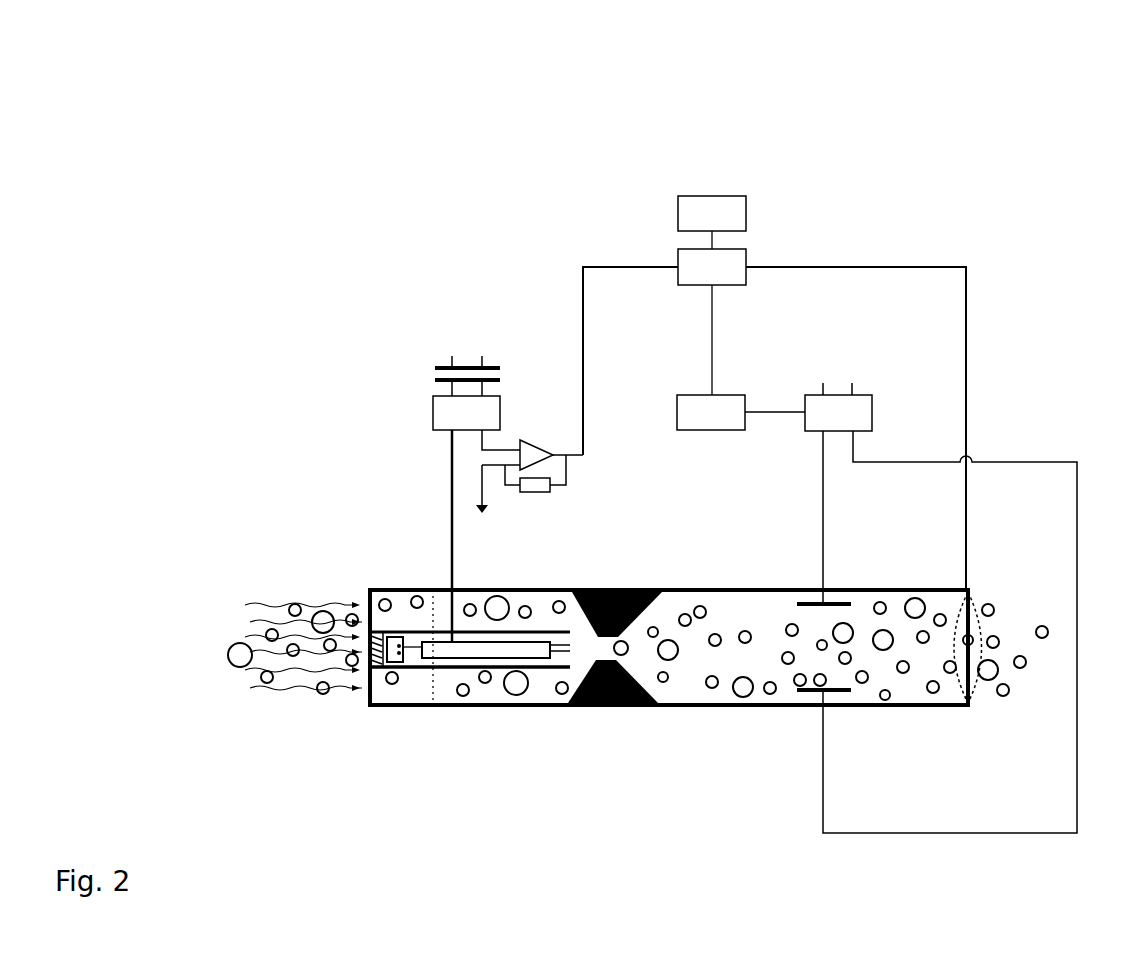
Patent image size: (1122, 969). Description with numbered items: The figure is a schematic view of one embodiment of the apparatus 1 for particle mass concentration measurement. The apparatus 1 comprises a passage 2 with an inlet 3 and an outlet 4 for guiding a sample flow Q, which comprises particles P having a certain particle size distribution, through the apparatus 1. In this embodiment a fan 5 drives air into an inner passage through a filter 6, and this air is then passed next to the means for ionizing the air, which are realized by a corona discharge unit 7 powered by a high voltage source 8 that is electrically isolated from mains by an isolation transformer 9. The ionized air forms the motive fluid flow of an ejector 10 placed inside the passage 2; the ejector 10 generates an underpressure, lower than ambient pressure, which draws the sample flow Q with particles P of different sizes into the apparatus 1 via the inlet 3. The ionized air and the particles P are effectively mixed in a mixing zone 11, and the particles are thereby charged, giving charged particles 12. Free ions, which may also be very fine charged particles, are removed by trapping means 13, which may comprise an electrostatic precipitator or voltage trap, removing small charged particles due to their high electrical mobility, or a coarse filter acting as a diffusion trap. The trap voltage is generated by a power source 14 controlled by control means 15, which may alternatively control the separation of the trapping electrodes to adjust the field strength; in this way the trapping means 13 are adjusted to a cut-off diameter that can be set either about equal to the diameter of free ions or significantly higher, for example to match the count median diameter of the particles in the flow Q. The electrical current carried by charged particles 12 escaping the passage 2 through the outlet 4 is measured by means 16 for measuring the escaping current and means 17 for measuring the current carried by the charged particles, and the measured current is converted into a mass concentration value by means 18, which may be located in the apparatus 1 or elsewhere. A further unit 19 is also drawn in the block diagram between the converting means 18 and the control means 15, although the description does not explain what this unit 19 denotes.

The apparatus 1 is at (698, 130).
The passage 2 is at (463, 708).
The inlet 3 is at (388, 706).
The outlet 4 is at (966, 708).
The fan 5 is at (413, 665).
The filter 6 is at (368, 708).
The corona discharge unit 7 is at (562, 658).
The high voltage source 8 is at (425, 410).
The isolation transformer 9 is at (425, 368).
The ejector 10 is at (615, 590).
The mixing zone 11 is at (700, 612).
The charged particles 12 is at (792, 624).
The trapping means 13 is at (812, 692).
The power source 14 is at (872, 412).
The control means 15 is at (677, 412).
The means for measuring escaping current 16 is at (535, 493).
The means for measuring electrical current 17 is at (980, 592).
The means for converting current to mass concentration 18 is at (720, 196).
The evaluation unit 19 is at (760, 258).
The sample flow Q is at (205, 642).
The particles P is at (305, 605).